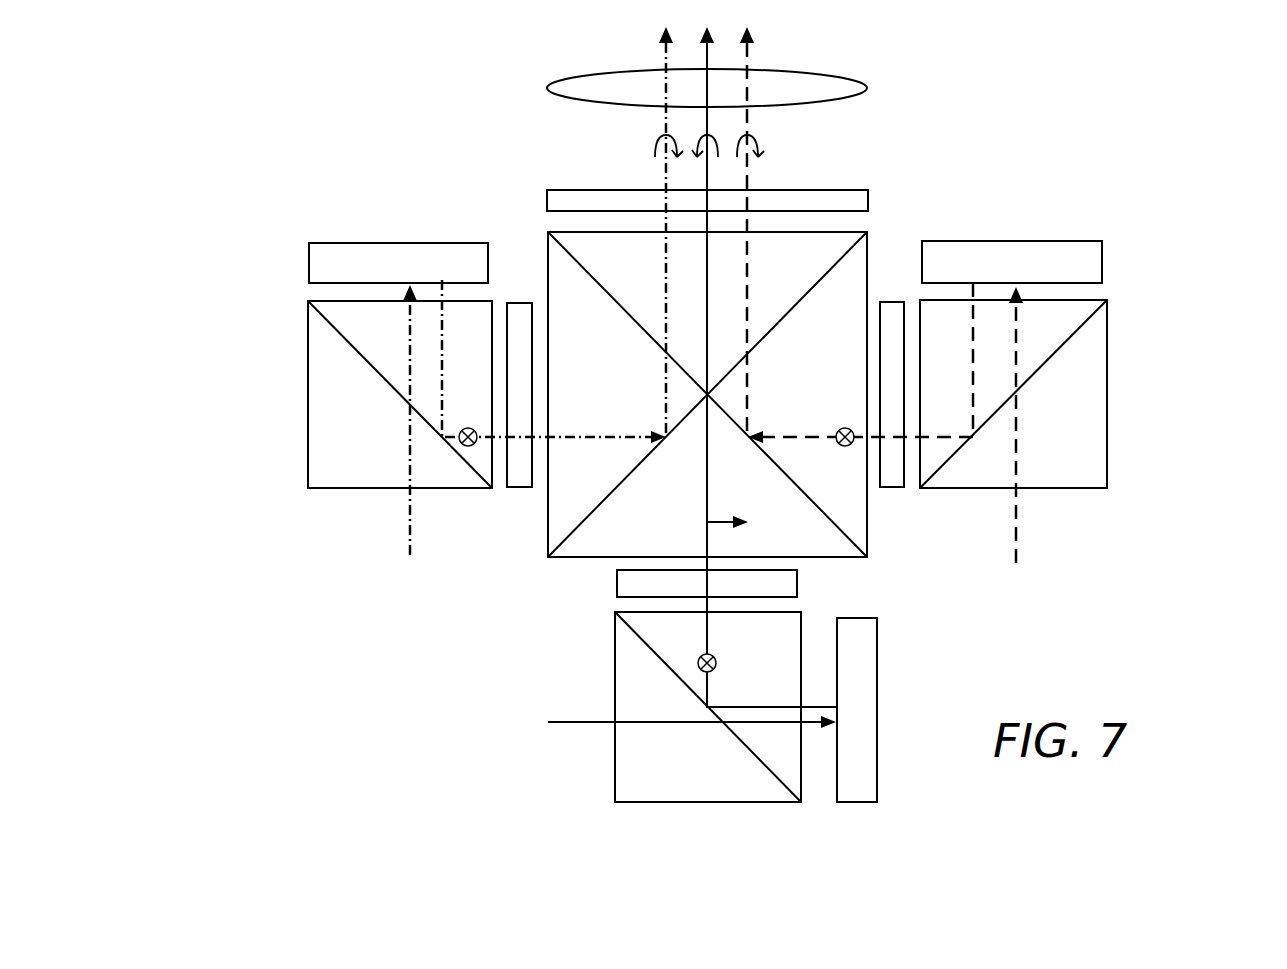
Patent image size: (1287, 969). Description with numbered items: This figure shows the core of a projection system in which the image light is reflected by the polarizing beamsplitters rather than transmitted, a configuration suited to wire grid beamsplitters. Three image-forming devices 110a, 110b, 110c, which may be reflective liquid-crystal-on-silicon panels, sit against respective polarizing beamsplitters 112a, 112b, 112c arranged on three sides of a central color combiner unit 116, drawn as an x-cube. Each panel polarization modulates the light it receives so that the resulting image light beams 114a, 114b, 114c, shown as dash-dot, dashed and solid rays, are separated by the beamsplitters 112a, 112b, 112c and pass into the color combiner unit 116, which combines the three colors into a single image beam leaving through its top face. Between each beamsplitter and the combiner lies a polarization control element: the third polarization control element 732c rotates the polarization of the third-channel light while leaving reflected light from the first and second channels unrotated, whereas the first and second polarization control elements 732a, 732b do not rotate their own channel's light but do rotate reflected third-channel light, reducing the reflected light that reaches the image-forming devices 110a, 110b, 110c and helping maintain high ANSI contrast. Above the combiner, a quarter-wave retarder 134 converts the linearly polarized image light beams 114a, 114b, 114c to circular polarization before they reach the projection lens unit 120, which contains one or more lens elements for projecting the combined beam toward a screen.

The projection lens unit 120 is at (570, 75).
The quarter-wave retarder 134 is at (850, 190).
The color combiner unit 116 is at (865, 242).
The first polarization control element 732a is at (523, 303).
The second polarization control element 732b is at (897, 487).
The third polarization control element 732c is at (797, 587).
The image-forming device 110a is at (309, 277).
The image-forming device 110b is at (1040, 240).
The image-forming device 110c is at (857, 803).
The polarizing beamsplitter 112a is at (308, 423).
The polarizing beamsplitter 112b is at (1108, 320).
The polarizing beamsplitter 112c is at (615, 782).
The image light beam 114a is at (563, 438).
The image light beam 114b is at (948, 440).
The image light beam 114c is at (707, 631).